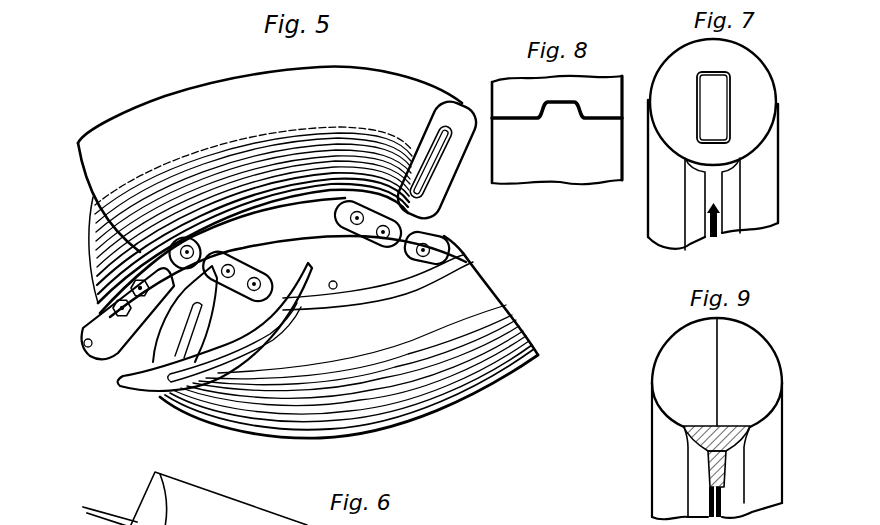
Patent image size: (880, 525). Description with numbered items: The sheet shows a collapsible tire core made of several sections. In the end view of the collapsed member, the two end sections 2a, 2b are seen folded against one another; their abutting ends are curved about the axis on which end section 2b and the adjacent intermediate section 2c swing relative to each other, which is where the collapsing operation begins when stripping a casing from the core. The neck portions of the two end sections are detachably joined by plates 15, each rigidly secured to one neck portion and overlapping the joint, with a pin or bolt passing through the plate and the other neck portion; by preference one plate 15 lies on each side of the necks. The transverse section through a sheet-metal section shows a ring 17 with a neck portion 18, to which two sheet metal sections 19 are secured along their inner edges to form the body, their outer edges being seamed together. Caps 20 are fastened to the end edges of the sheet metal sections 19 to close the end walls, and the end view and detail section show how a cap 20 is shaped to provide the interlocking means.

In FIG. 5, the end section 2a is at (350, 428).
In FIG. 5, the end section 2b is at (95, 222).
In FIG. 5, the intermediate section 2c is at (377, 78).
In FIG. 5, the plate 15 is at (100, 323).
In FIG. 6, the plate 15 is at (88, 507).
In FIG. 9, the ring 17 is at (727, 425).
In FIG. 9, the neck portion 18 is at (726, 476).
In FIG. 9, the sheet metal section 19 is at (661, 355).
In FIG. 8, the cap 20 is at (597, 116).
In FIG. 7, the cap 20 is at (776, 108).